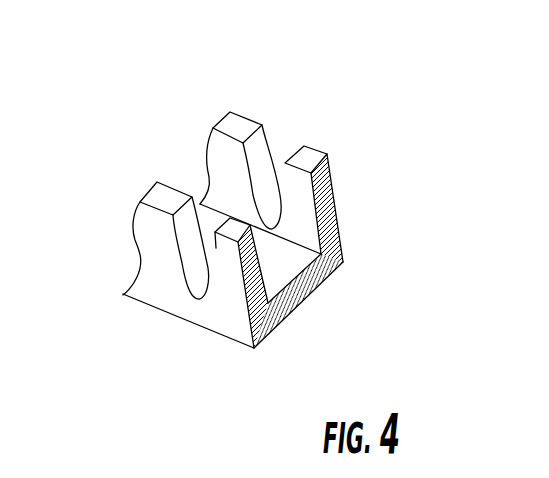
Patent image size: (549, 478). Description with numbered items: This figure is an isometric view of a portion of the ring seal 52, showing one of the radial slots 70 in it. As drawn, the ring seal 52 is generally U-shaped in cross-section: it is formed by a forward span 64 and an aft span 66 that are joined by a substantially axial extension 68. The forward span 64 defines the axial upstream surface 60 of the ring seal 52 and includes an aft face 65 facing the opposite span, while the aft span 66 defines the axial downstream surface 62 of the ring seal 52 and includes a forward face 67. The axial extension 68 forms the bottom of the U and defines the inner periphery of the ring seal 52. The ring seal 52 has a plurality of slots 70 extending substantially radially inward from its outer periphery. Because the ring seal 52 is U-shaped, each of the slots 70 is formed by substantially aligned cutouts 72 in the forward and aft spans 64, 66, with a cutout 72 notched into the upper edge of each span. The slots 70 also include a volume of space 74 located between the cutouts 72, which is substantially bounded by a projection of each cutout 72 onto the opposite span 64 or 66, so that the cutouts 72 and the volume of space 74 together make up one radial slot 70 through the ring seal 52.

The ring seal 52 is at (252, 72).
The axial upstream surface 60 is at (150, 267).
The axial downstream surface 62 is at (332, 188).
The forward span 64 is at (256, 352).
The aft face 65 is at (173, 180).
The aft span 66 is at (337, 218).
The forward face 67 is at (220, 150).
The axial extension 68 is at (331, 275).
The slots 70 is at (277, 118).
The cutouts 72 is at (296, 136).
The volume of space 74 is at (272, 258).